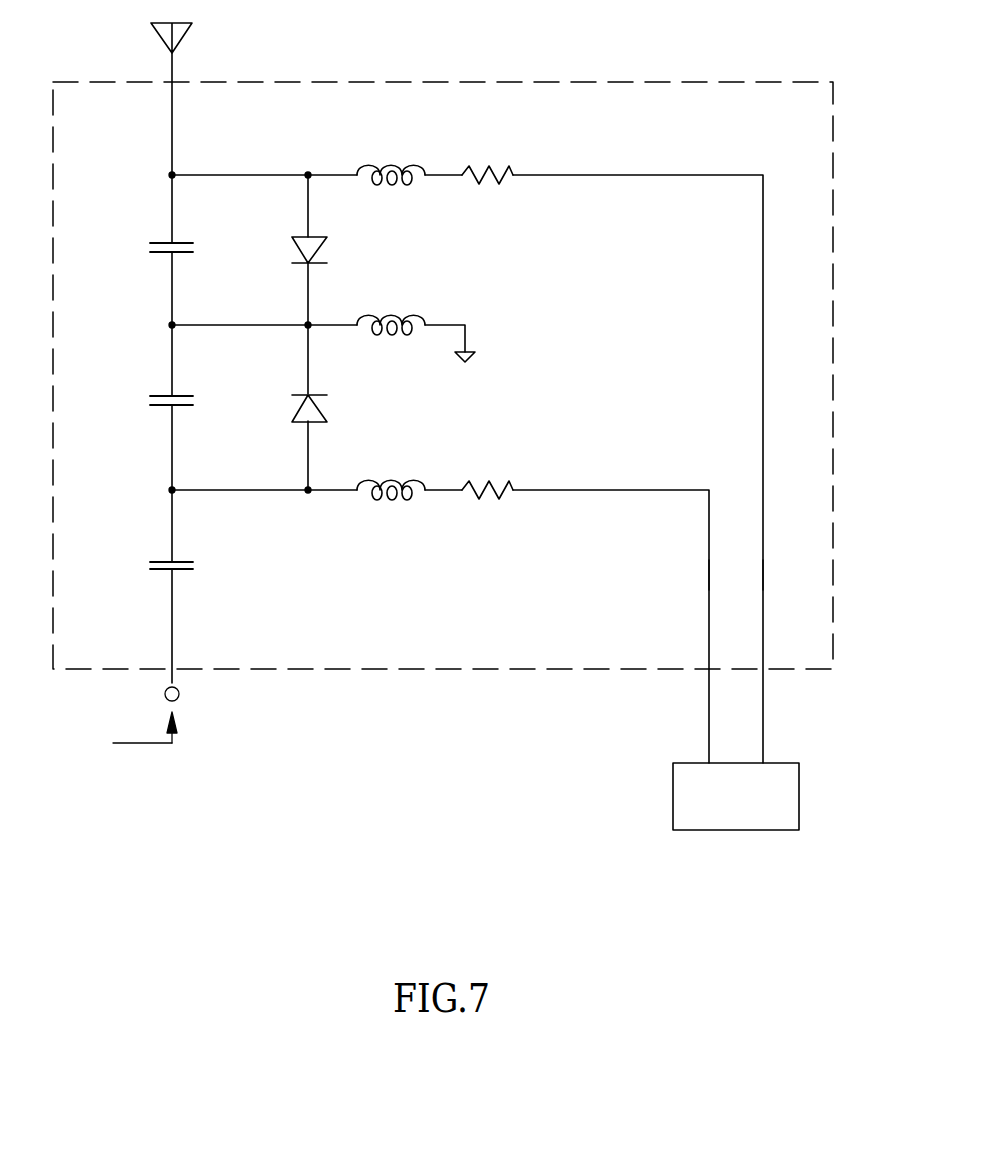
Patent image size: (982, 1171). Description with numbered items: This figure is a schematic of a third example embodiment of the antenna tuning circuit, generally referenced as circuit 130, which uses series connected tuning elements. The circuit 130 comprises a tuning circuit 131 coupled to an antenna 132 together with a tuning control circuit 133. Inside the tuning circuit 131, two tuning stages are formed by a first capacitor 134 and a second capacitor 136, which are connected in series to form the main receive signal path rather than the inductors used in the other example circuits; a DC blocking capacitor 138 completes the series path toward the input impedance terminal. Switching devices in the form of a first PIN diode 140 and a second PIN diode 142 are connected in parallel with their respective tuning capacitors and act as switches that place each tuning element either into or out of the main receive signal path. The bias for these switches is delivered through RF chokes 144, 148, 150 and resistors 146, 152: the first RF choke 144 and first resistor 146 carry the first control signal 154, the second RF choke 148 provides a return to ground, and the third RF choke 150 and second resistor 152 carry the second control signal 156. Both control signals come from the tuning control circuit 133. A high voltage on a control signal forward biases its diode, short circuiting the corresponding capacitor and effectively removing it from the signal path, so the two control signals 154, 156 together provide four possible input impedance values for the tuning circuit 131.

The circuit 130 is at (277, 748).
The tuning circuit 131 is at (460, 671).
The antenna 132 is at (188, 37).
The tuning control circuit 133 is at (801, 797).
The capacitor C0 134 is at (163, 257).
The capacitor C1 136 is at (163, 410).
The DC blocking capacitor C 138 is at (163, 572).
The PIN diode D0 140 is at (323, 238).
The PIN diode D1 142 is at (323, 408).
The RF choke L 144 is at (408, 164).
The resistor R 146 is at (509, 177).
The RF choke L 148 is at (411, 316).
The RF choke L 150 is at (388, 500).
The resistor R 152 is at (482, 494).
The Control0 control signal 154 is at (764, 573).
The Control1 control signal 156 is at (709, 573).